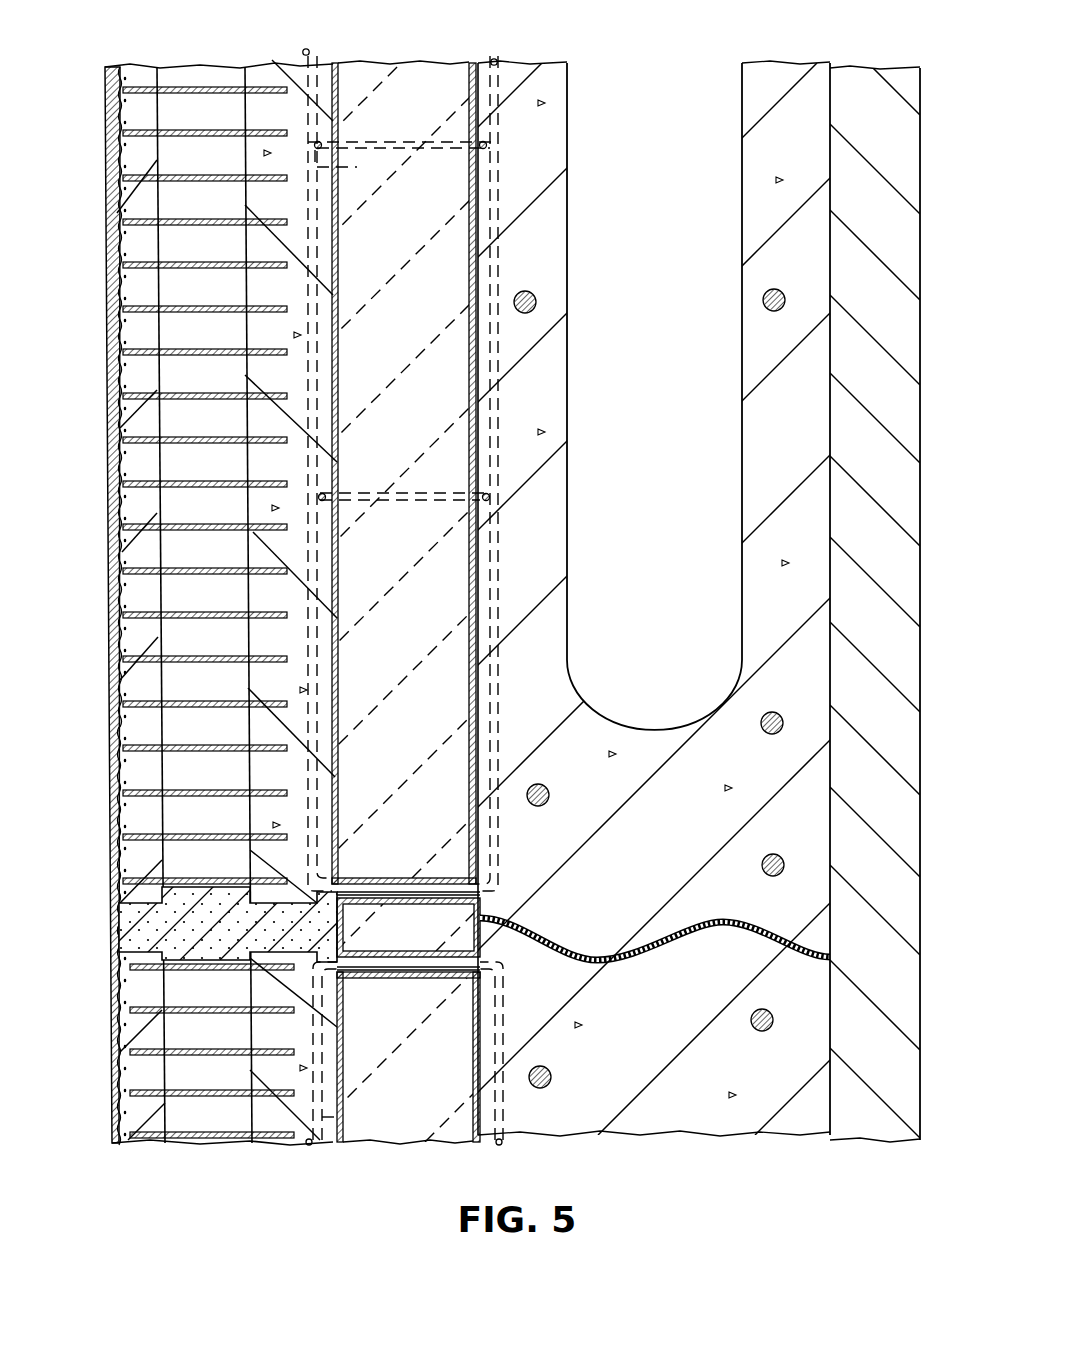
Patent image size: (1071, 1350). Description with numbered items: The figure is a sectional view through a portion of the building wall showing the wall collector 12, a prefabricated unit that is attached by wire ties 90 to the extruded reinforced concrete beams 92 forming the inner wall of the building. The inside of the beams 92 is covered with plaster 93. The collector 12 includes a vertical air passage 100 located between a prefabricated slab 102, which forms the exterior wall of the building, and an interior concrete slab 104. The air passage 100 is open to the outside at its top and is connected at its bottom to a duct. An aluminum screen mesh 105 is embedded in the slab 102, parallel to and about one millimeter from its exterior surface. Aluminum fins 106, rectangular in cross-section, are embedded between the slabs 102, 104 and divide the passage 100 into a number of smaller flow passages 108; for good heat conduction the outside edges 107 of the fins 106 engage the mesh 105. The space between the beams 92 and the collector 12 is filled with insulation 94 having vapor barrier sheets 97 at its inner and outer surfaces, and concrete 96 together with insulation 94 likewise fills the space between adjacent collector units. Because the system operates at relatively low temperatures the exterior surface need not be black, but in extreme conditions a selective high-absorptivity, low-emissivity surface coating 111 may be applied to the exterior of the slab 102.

The wall collector 12 is at (333, 56).
The wire ties 90 is at (335, 152).
The extruded reinforced concrete beams 92 is at (830, 48).
The plaster 93 is at (866, 68).
The insulation 94 is at (386, 62).
The concrete 96 is at (218, 930).
The vapor barrier sheets 97 is at (340, 873).
The vertical air passage 100 is at (210, 1152).
The prefabricated slab 102 is at (136, 210).
The interior concrete slab 104 is at (290, 771).
The aluminum screen mesh 105 is at (120, 636).
The aluminum fins 106 is at (228, 314).
The outside edges 107 is at (125, 707).
The flow passages 108 is at (176, 598).
The selective surface coating 111 is at (108, 378).